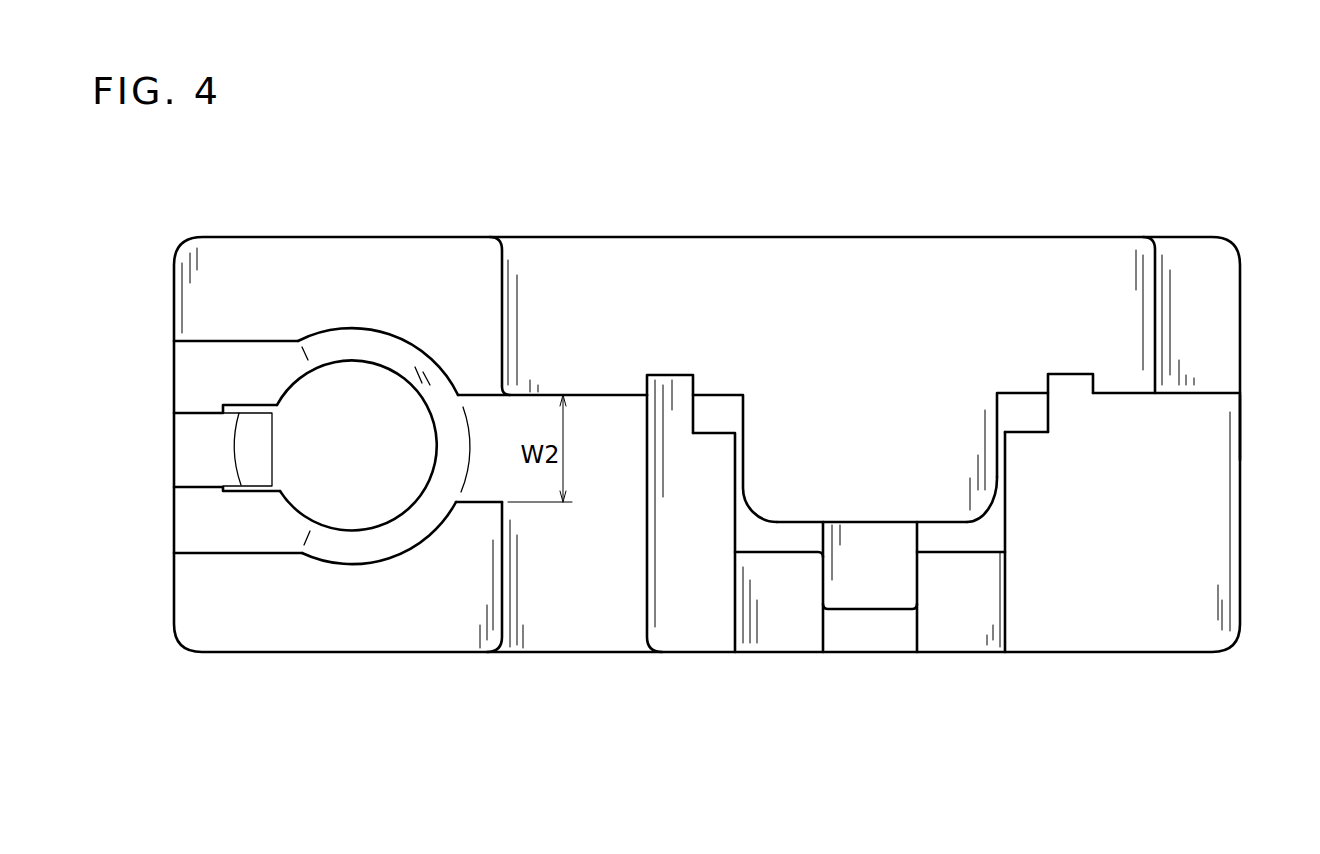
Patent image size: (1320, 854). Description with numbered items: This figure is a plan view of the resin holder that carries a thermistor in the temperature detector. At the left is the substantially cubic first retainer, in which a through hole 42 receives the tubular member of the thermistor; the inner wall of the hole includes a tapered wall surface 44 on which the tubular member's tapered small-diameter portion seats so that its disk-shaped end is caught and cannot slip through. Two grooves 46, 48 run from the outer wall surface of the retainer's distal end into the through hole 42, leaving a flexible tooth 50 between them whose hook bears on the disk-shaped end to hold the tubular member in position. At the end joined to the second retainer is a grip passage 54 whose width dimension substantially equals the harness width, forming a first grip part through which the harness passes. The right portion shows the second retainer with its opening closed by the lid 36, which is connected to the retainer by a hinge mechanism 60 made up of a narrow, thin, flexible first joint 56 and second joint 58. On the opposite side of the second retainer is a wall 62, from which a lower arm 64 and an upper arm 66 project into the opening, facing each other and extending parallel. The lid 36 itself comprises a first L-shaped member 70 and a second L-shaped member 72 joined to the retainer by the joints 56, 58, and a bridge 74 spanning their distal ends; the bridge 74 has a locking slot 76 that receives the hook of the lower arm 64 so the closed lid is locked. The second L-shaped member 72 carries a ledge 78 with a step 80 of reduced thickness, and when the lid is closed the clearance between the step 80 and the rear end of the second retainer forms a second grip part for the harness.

The lid 36 is at (1153, 637).
The through hole 42 is at (355, 565).
The tapered wall surface 44 is at (348, 345).
The groove 46 is at (242, 552).
The groove 48 is at (211, 342).
The flexible tooth 50 is at (178, 433).
The grip passage 54 is at (484, 398).
The first joint 56 is at (683, 383).
The second joint 58 is at (1072, 383).
The hinge mechanism 60 is at (1085, 190).
The wall 62 is at (1208, 300).
The lower arm 64 is at (885, 598).
The upper arm 66 is at (948, 497).
The first L-shaped member 70 is at (722, 450).
The second L-shaped member 72 is at (1043, 635).
The bridge 74 is at (777, 636).
The locking slot 76 is at (826, 645).
The ledge 78 is at (1208, 556).
The step 80 is at (1243, 425).